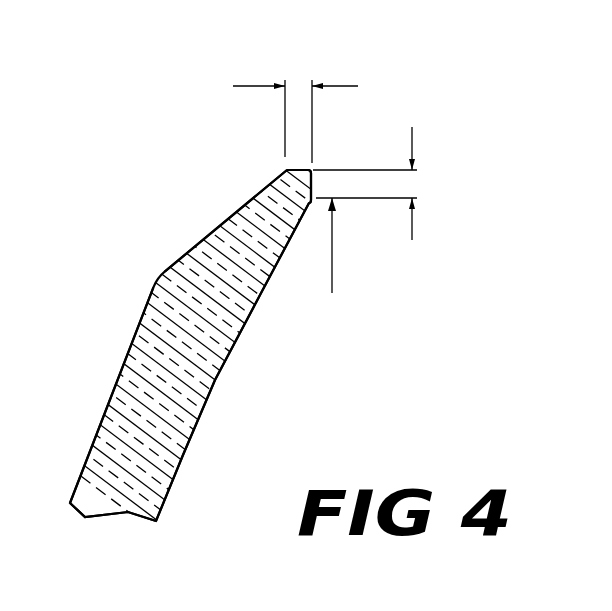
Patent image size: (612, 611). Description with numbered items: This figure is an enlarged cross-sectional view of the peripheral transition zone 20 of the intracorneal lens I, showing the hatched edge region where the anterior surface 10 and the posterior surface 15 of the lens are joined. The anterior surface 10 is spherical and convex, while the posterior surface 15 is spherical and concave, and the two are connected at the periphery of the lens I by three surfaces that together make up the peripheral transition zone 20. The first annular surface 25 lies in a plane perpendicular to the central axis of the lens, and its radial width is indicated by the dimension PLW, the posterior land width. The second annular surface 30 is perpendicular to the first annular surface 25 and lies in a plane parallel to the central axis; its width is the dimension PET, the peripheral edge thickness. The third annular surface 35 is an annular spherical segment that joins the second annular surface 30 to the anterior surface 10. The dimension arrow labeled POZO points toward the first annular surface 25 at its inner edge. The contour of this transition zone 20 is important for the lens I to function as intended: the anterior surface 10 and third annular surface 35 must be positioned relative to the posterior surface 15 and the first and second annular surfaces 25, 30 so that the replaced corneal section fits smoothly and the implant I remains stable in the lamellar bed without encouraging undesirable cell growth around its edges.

The peripheral transition zone 20 is at (206, 174).
The second annular surface 30 is at (300, 168).
The first annular surface 25 is at (317, 181).
The third annular surface 35 is at (207, 237).
The posterior surface 15 is at (225, 362).
The anterior surface 10 is at (118, 372).
The intracorneal lens I is at (110, 457).
The peripheral edge thickness PET is at (298, 86).
The posterior land width PLW is at (412, 183).
The position reference POZO is at (385, 262).